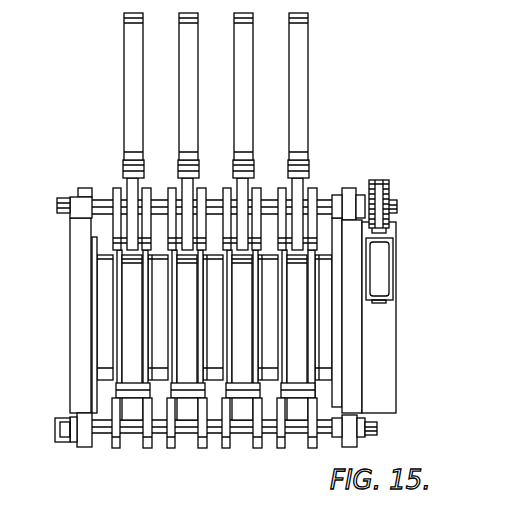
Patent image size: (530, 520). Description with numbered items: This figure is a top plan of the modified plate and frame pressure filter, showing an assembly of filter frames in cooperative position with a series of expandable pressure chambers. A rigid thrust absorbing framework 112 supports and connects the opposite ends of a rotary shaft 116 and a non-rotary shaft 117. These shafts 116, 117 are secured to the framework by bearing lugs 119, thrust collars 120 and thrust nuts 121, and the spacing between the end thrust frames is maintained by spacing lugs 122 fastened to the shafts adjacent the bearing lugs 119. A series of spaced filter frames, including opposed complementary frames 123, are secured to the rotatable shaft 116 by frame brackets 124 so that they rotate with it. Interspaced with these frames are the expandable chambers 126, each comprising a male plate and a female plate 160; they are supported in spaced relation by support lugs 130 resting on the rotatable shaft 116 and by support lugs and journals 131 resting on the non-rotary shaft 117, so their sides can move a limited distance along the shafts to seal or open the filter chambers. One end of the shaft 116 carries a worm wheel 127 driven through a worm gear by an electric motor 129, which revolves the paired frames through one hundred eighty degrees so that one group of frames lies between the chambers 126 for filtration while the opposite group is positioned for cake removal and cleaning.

The thrust absorbing framework 112 is at (417, 318).
The rotary shaft 116 is at (320, 200).
The non-rotary shaft 117 is at (253, 432).
The bearing lug 119 is at (83, 188).
The thrust collar 120 is at (72, 446).
The thrust nut 121 is at (62, 197).
The spacing lug 122 is at (95, 197).
The complementary frame 123 is at (298, 80).
The frame bracket 124 is at (298, 190).
The expandable chamber 126 is at (222, 382).
The worm wheel 127 is at (391, 192).
The electric motor 129 is at (392, 272).
The support lug 130 is at (227, 193).
The support lug and journal 131 is at (205, 446).
The female plate 160 is at (311, 342).